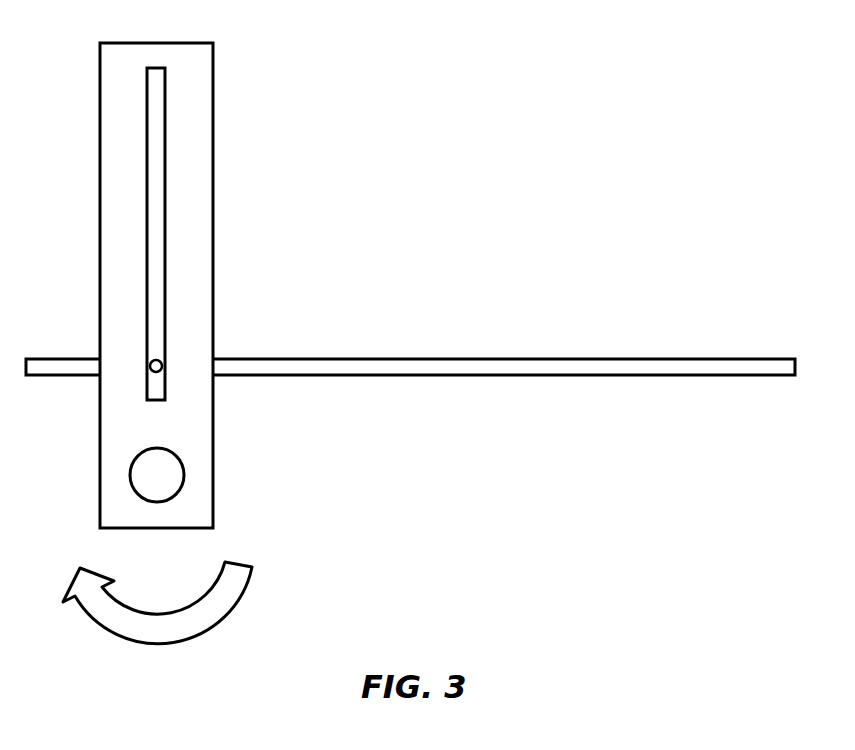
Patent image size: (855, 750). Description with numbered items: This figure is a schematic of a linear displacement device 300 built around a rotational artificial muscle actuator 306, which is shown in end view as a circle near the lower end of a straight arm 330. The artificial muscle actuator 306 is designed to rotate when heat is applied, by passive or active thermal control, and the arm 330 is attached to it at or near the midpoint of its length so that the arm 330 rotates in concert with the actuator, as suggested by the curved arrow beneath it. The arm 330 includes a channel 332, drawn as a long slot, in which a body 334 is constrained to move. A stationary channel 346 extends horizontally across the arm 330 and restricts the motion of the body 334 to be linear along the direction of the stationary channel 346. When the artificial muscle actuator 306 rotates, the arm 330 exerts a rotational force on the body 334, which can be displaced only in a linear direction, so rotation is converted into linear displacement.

The linear displacement device 300 is at (508, 132).
The artificial muscle actuator 306 is at (168, 463).
The arm 330 is at (193, 225).
The channel 332 is at (158, 154).
The body 334 is at (158, 360).
The stationary channel 346 is at (502, 358).